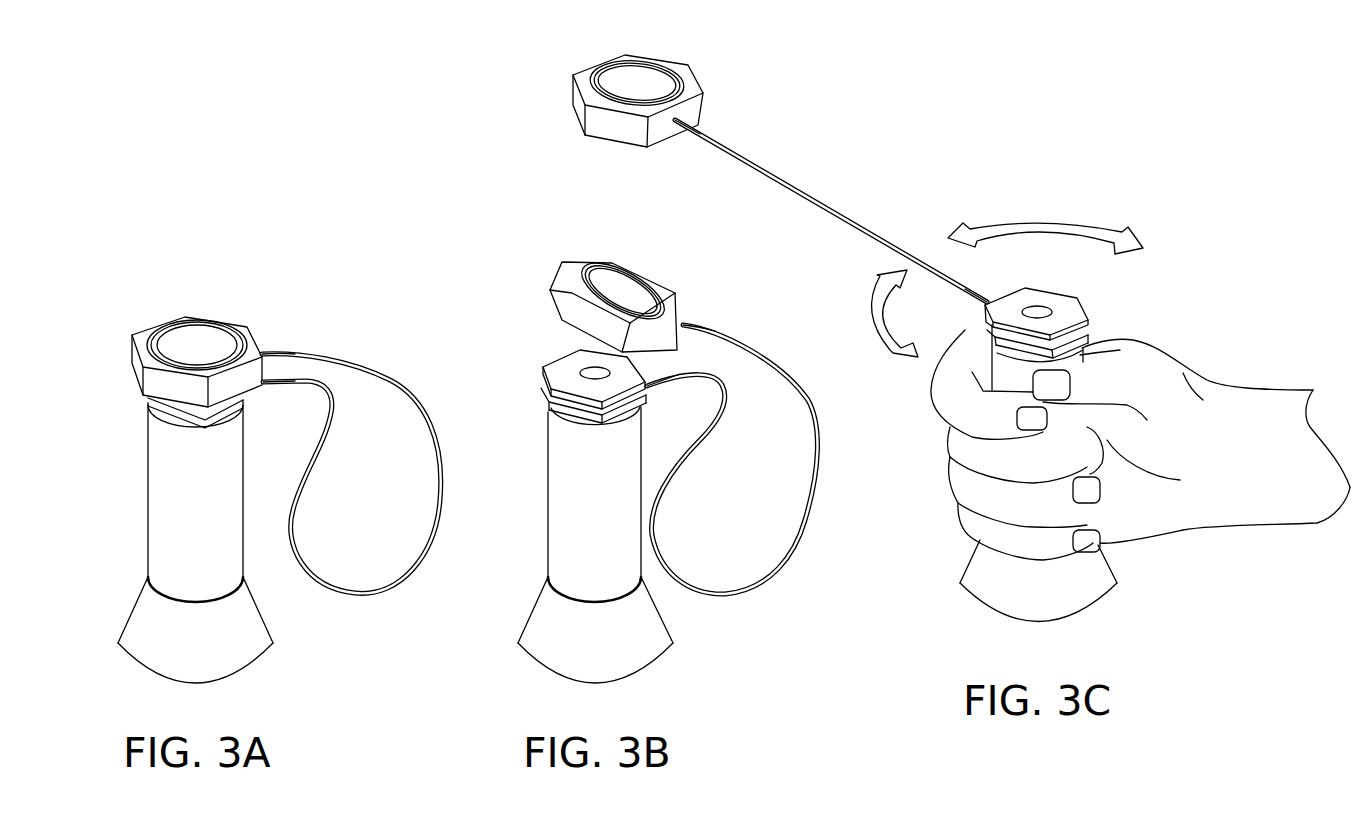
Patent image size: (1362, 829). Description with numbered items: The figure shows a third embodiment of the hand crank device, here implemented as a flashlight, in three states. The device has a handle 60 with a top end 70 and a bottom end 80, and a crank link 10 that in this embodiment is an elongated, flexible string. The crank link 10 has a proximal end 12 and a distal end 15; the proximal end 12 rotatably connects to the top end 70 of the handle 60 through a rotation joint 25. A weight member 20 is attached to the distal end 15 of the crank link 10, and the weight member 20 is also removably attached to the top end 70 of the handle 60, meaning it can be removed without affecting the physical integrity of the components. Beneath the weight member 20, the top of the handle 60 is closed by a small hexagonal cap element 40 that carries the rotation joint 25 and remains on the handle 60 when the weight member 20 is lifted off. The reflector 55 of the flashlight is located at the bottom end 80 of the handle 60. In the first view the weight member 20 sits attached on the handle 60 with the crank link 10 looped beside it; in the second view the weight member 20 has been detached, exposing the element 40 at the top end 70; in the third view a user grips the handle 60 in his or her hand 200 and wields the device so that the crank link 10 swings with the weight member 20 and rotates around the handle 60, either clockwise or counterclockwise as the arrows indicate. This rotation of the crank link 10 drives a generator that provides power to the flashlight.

In FIG. 3A, the crank link 10 is at (348, 595).
In FIG. 3B, the crank link 10 is at (772, 577).
In FIG. 3C, the crank link 10 is at (835, 207).
In FIG. 3A, the proximal end 12 is at (276, 382).
In FIG. 3B, the proximal end 12 is at (653, 390).
In FIG. 3C, the proximal end 12 is at (988, 302).
In FIG. 3A, the distal end 15 is at (278, 352).
In FIG. 3B, the distal end 15 is at (692, 327).
In FIG. 3C, the distal end 15 is at (688, 123).
In FIG. 3A, the weight member 20 is at (197, 343).
In FIG. 3B, the weight member 20 is at (623, 290).
In FIG. 3C, the weight member 20 is at (638, 85).
In FIG. 3A, the rotation joint 25 is at (152, 407).
In FIG. 3B, the rotation joint 25 is at (570, 405).
In FIG. 3C, the rotation joint 25 is at (993, 335).
In FIG. 3B, the inner cap 40 is at (553, 377).
In FIG. 3C, the inner cap 40 is at (1077, 310).
In FIG. 3A, the reflector 55 is at (253, 653).
In FIG. 3B, the reflector 55 is at (653, 652).
In FIG. 3C, the reflector 55 is at (1095, 592).
In FIG. 3A, the handle 60 is at (162, 487).
In FIG. 3B, the handle 60 is at (562, 498).
In FIG. 3C, the handle 60 is at (1043, 430).
In FIG. 3B, the top end 70 is at (590, 372).
In FIG. 3C, the top end 70 is at (1038, 308).
In FIG. 3A, the bottom end 80 is at (177, 667).
In FIG. 3B, the bottom end 80 is at (575, 663).
In FIG. 3C, the bottom end 80 is at (1017, 603).
In FIG. 3C, the hand 200 is at (1162, 420).